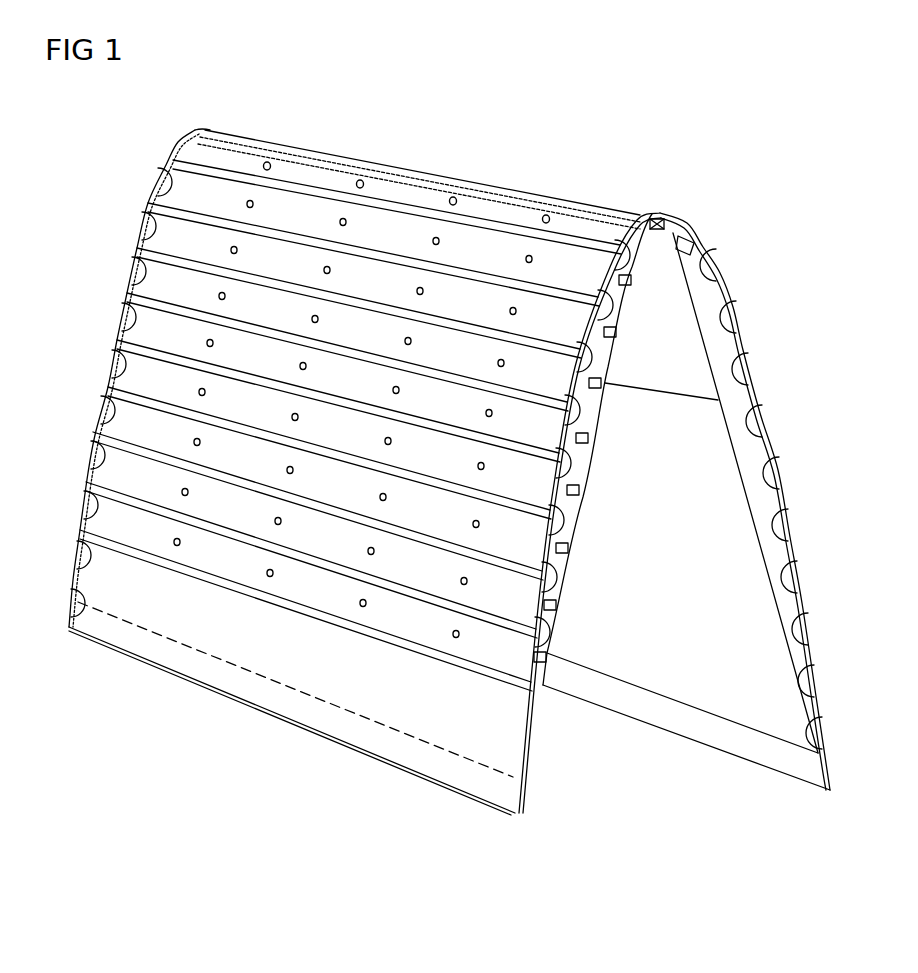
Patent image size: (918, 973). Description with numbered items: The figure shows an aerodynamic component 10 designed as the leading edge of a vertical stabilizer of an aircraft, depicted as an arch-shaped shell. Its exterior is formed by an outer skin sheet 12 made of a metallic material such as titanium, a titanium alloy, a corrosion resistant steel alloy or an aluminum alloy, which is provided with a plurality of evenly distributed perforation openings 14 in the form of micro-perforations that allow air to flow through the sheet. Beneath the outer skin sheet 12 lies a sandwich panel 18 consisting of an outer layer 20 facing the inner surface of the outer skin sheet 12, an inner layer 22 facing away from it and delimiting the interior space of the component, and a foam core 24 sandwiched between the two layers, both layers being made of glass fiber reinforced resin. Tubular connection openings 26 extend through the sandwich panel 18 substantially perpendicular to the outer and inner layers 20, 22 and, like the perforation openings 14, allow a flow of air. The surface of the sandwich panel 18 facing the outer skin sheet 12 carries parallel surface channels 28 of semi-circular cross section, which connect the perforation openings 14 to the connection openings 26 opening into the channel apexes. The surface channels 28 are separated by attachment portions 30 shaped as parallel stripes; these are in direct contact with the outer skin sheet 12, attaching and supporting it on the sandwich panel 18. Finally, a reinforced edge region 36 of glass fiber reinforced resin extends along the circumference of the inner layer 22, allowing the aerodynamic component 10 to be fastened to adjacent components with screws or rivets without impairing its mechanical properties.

The aerodynamic component 10 is at (440, 112).
The outer skin sheet 12 is at (125, 597).
The perforation openings 14 is at (115, 470).
The sandwich panel 18 is at (713, 288).
The outer layer 20 is at (752, 370).
The inner layer 22 is at (728, 445).
The foam core 24 is at (790, 512).
The connection openings 26 is at (360, 180).
The surface channels 28 is at (537, 625).
The attachment portions 30 is at (583, 512).
The reinforced edge region 36 is at (413, 752).